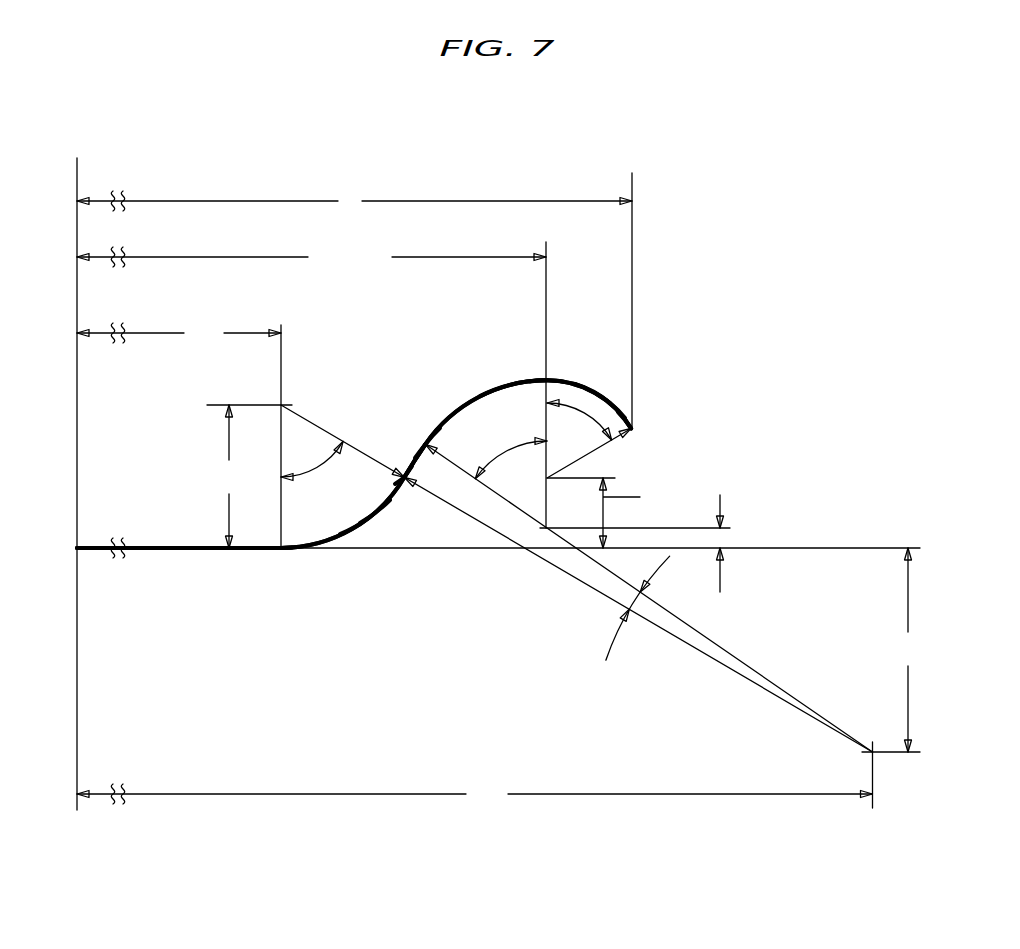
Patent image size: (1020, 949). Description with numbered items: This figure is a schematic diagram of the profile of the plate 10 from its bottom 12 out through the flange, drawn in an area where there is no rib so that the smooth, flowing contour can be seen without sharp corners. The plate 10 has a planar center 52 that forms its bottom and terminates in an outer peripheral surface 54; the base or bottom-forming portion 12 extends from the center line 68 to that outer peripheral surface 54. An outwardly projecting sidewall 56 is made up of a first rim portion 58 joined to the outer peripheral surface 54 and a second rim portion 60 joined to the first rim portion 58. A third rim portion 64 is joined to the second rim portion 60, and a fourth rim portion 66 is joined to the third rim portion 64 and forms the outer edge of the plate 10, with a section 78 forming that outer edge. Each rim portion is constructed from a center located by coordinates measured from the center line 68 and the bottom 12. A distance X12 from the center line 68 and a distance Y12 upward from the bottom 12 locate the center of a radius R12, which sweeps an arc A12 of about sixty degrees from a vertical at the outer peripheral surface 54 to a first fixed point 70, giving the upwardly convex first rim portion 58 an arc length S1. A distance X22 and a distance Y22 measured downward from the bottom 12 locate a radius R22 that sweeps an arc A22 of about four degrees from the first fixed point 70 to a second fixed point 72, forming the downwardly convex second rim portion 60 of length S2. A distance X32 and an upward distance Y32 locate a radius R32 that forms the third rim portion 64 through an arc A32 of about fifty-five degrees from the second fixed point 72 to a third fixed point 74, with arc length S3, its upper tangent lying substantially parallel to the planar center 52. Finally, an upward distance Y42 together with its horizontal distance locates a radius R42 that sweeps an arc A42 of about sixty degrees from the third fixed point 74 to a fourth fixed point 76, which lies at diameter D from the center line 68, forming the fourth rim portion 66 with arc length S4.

The plate 10 is at (177, 561).
The bottom 12 is at (88, 546).
The planar center 52 is at (196, 546).
The outer peripheral surface 54 is at (270, 556).
The outwardly projecting sidewall 56 is at (328, 542).
The first rim portion 58 is at (357, 527).
The second rim portion 60 is at (419, 443).
The third rim portion 64 is at (492, 389).
The fourth rim portion 66 is at (622, 413).
The center line 68 is at (80, 552).
The first fixed point 70 is at (409, 484).
The second fixed point 72 is at (423, 440).
The third fixed point 74 is at (554, 378).
The fourth fixed point 76 is at (634, 427).
The section 78 is at (612, 403).
The first arc length S1 is at (378, 512).
The second arc length S2 is at (413, 462).
The third arc length S3 is at (513, 383).
The fourth arc length S4 is at (600, 394).
The diameter D is at (354, 201).
The distance X12 is at (179, 333).
The distance X22 is at (475, 794).
The distance X32 is at (311, 257).
The distance Y12 is at (228, 476).
The distance Y22 is at (909, 650).
The distance Y32 is at (741, 543).
The distance Y42 is at (639, 513).
The first radius R12 is at (307, 420).
The second radius R22 is at (592, 588).
The third radius R32 is at (459, 466).
The fourth radius R42 is at (594, 451).
The first arc A12 is at (312, 459).
The second arc A22 is at (650, 616).
The third arc A32 is at (511, 459).
The fourth arc A42 is at (579, 425).